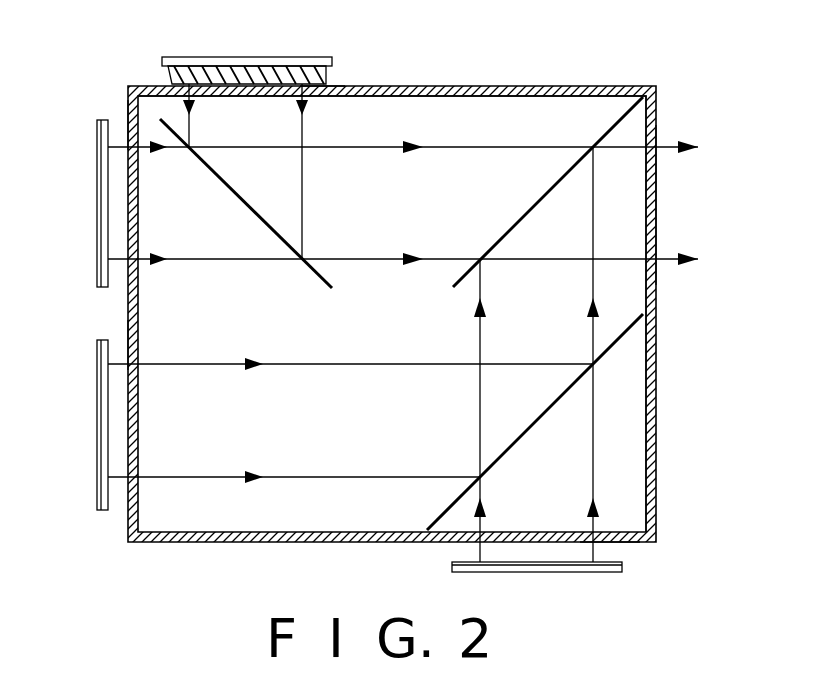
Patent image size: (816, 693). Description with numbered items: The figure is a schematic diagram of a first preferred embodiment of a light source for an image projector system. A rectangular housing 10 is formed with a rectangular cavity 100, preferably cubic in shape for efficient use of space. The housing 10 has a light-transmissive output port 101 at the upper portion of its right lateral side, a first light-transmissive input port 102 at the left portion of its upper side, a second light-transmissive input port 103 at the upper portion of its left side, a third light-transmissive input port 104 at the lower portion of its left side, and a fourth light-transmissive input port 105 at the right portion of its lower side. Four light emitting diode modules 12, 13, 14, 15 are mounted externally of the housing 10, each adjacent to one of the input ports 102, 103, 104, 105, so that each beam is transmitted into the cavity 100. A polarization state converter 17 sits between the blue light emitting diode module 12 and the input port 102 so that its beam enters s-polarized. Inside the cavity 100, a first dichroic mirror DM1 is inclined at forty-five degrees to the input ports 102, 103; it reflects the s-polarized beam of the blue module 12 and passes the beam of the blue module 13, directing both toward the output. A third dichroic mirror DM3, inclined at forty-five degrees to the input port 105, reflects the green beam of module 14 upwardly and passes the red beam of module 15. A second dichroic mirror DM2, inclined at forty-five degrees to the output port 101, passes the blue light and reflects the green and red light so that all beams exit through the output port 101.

The rectangular housing 10 is at (460, 86).
The rectangular cavity 100 is at (533, 122).
The light-transmissive output port 101 is at (656, 135).
The first light-transmissive input port 102 is at (332, 88).
The second light-transmissive input port 103 is at (128, 121).
The third light-transmissive input port 104 is at (128, 342).
The fourth light-transmissive input port 105 is at (613, 540).
The blue light emitting diode module 12 is at (177, 58).
The polarization state converter 17 is at (169, 78).
The blue light emitting diode module 13 is at (97, 187).
The green light emitting diode module 14 is at (104, 468).
The red light emitting diode module 15 is at (454, 542).
The first dichroic mirror DM1 is at (246, 205).
The second dichroic mirror DM2 is at (482, 255).
The third dichroic mirror DM3 is at (496, 461).